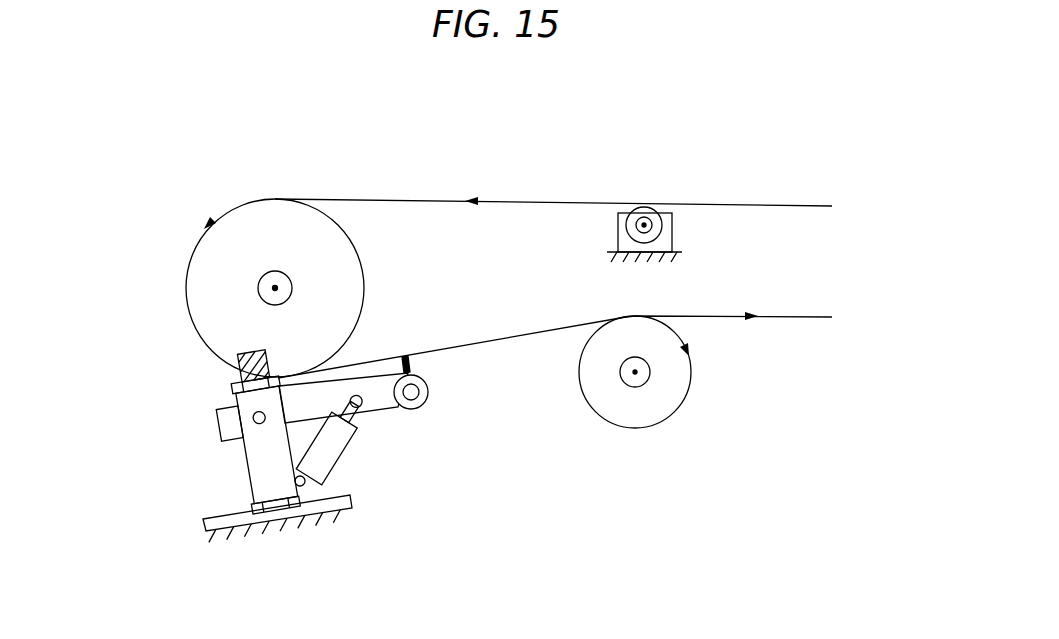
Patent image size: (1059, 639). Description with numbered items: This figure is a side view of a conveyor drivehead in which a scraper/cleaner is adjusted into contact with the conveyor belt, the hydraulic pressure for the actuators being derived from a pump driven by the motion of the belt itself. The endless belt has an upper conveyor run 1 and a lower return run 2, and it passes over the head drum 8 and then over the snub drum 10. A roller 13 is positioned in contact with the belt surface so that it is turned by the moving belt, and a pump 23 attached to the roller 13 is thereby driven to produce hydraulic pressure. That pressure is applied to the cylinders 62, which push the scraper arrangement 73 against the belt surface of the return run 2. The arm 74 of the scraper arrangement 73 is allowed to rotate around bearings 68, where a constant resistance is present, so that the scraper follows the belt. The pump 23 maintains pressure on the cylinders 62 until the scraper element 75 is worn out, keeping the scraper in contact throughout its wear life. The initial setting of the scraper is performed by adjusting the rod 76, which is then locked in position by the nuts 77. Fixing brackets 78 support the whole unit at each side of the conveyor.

The upper conveyor run 1 is at (692, 198).
The lower return run 2 is at (787, 323).
The head drum 8 is at (185, 270).
The snub drum 10 is at (667, 411).
The roller 13 is at (627, 202).
The pump 23 is at (678, 236).
The cylinders 62 is at (343, 463).
The bearings 68 is at (222, 436).
The scraper arrangement 73 is at (425, 412).
The arm 74 is at (222, 424).
The scraper element 75 is at (413, 365).
The rod 76 is at (236, 356).
The nuts 77 is at (230, 384).
The fixing brackets 78 is at (281, 523).